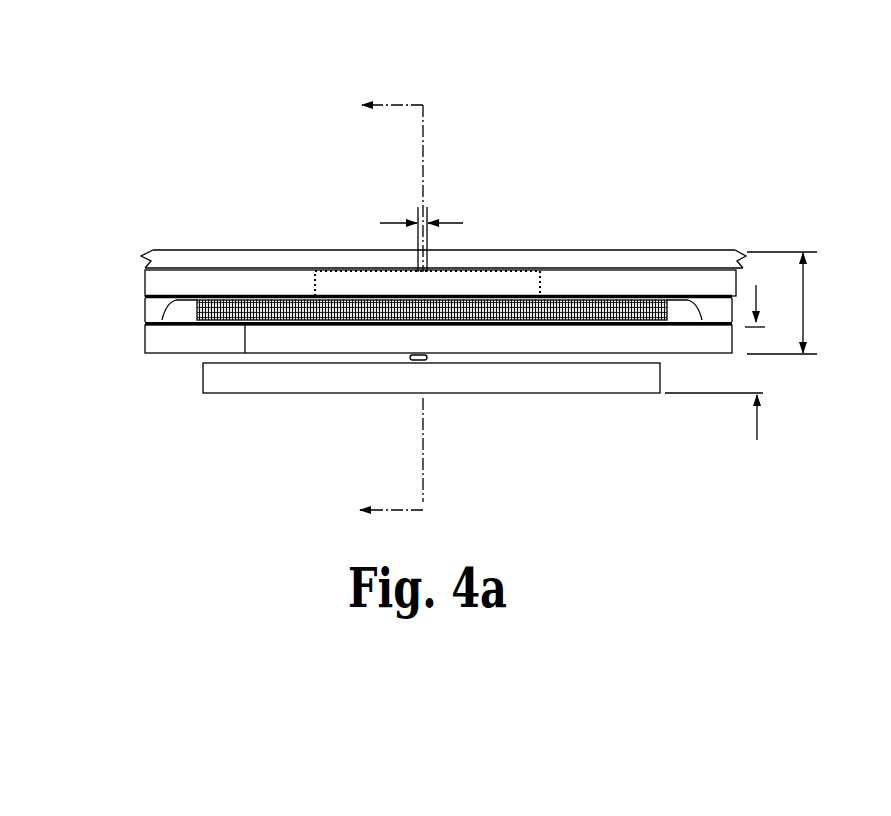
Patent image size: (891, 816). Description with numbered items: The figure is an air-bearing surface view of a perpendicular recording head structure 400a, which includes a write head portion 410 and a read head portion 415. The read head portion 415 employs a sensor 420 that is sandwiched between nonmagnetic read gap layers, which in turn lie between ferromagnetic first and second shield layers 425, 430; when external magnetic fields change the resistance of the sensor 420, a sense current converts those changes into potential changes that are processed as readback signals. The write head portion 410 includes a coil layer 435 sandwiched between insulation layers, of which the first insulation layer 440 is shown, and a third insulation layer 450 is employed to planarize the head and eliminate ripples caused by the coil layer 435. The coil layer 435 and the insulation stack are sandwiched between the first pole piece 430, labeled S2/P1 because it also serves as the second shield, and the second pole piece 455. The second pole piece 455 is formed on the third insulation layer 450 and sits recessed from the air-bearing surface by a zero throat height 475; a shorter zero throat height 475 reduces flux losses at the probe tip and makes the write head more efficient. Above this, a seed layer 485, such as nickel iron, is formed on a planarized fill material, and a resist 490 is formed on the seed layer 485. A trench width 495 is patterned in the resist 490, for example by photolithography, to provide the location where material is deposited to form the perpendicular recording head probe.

The perpendicular recording head structure 400a is at (607, 115).
The write head portion 410 is at (805, 307).
The read head portion 415 is at (757, 430).
The sensor 420 is at (420, 362).
The first shield layer 425 is at (255, 380).
The first pole piece (P1) / second shield layer 430 is at (338, 342).
The coil layer 435 is at (210, 302).
The first insulation layer 440 is at (148, 323).
The third insulation layer 450 is at (148, 297).
The second pole piece (P2) 455 is at (510, 288).
The zero throat height (ZTH) 475 is at (317, 270).
The seed layer 485 is at (143, 262).
The resist 490 is at (187, 248).
The trench width 495 is at (460, 222).